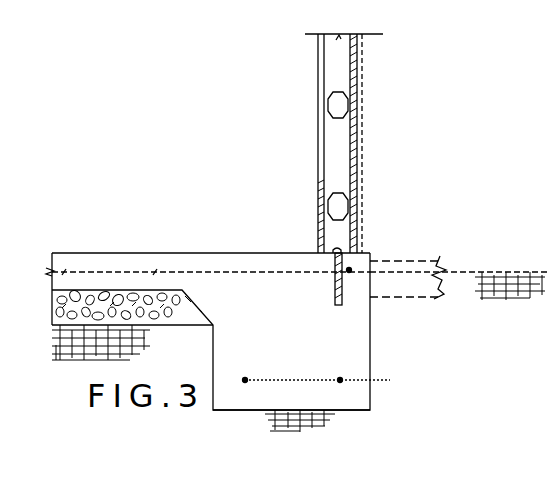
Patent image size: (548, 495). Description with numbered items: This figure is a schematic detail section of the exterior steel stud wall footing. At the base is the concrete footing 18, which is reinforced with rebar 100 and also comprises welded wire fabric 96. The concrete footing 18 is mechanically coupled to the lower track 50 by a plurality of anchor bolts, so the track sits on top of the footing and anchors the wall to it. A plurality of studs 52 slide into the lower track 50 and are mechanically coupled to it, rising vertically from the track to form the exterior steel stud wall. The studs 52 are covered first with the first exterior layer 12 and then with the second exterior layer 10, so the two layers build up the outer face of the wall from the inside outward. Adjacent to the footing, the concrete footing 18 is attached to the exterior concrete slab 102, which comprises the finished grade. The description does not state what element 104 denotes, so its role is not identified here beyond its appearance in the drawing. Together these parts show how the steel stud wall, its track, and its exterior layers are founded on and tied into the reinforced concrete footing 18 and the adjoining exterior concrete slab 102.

The second exterior layer 10 is at (362, 85).
The first exterior layer 12 is at (362, 65).
The studs 52 is at (318, 103).
The lower track 50 is at (362, 215).
The welded wire fabric 96 is at (147, 272).
The ground surface 104 is at (410, 262).
The exterior concrete slab 102 is at (422, 275).
The rebar 100 is at (349, 273).
The concrete footing 18 is at (370, 412).